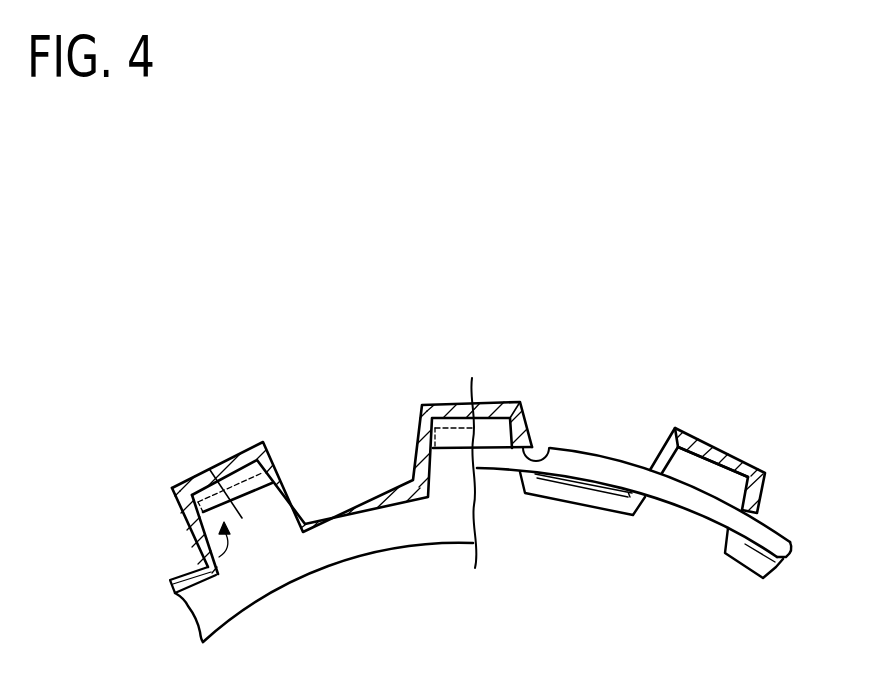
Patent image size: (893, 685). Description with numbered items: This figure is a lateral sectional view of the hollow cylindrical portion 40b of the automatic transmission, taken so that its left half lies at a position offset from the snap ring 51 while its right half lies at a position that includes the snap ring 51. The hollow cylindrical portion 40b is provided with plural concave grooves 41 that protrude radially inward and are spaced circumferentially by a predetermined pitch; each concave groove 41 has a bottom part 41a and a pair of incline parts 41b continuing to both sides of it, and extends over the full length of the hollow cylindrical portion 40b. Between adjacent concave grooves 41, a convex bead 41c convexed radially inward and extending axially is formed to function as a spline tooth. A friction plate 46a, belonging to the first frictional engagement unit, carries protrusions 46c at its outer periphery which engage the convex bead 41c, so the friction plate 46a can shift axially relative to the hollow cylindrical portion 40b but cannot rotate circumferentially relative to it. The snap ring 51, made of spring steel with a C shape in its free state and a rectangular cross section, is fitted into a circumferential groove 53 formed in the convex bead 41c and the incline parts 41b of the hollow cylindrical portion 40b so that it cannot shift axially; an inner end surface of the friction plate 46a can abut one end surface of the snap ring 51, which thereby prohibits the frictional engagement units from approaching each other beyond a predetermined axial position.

The hollow cylindrical portion 40b is at (344, 443).
The concave groove 41 is at (196, 558).
The bottom part 41a is at (223, 466).
The incline part 41b is at (290, 487).
The convex bead 41c is at (365, 496).
The friction plate 46a is at (322, 564).
The protrusion 46c is at (210, 482).
The snap ring 51 is at (770, 521).
The circumferential groove 53 is at (532, 459).